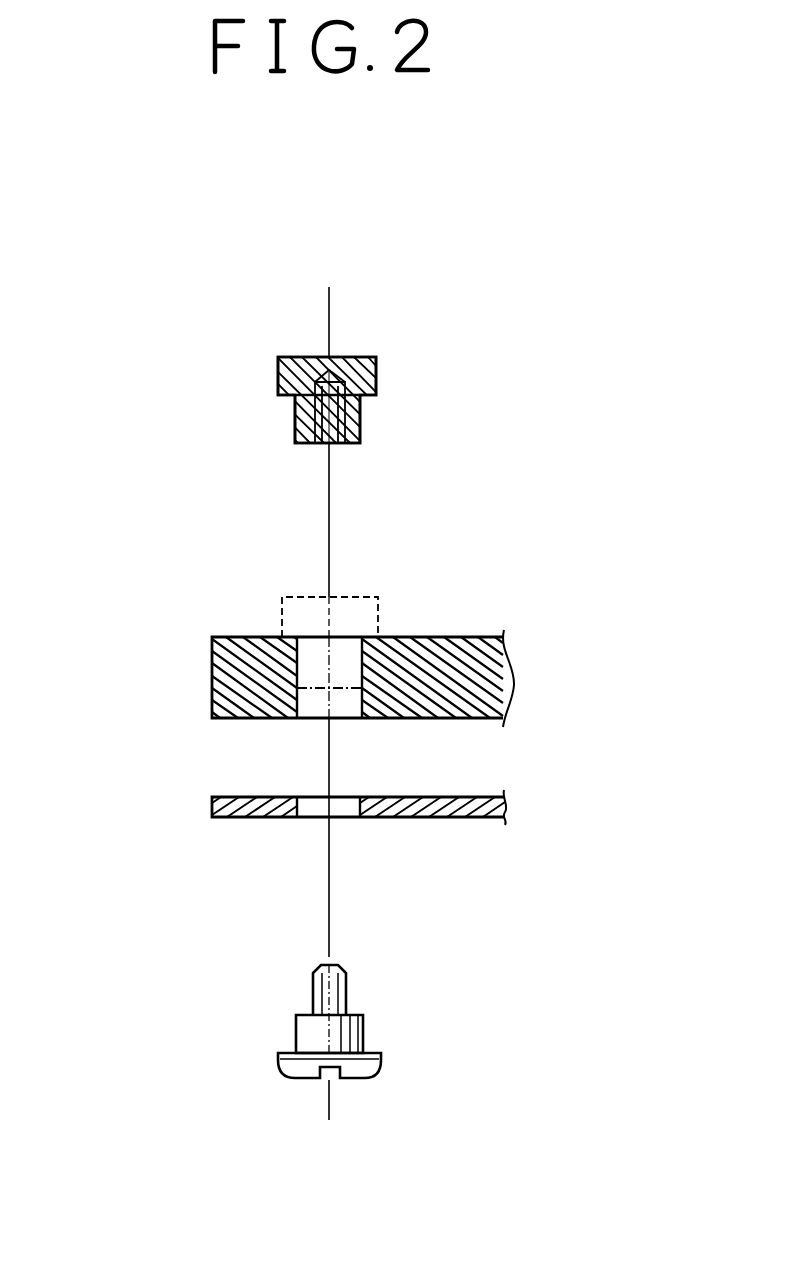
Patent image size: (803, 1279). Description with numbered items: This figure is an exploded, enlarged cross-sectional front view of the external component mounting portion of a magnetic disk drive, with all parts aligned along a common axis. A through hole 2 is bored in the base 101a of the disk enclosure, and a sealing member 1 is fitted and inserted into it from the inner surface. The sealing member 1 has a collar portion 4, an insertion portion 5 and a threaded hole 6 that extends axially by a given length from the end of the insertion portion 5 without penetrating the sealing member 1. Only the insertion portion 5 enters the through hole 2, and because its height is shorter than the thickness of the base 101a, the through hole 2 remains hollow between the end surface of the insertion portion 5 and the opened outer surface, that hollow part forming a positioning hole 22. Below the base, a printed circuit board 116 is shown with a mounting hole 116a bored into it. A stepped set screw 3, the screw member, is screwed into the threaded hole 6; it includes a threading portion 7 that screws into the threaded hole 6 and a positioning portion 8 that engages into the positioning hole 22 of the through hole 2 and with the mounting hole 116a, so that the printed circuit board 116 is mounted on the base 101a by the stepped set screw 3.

The sealing member 1 is at (376, 348).
The through hole 2 is at (313, 653).
The stepped set screw 3 is at (280, 1076).
The collar portion 4 is at (278, 375).
The insertion portion 5 is at (362, 422).
The threaded hole 6 is at (325, 445).
The threading portion 7 is at (347, 987).
The positioning portion 8 is at (363, 1033).
The positioning hole 22 is at (308, 708).
The base 101a is at (470, 718).
The printed circuit board 116 is at (488, 817).
The mounting hole 116a is at (347, 807).